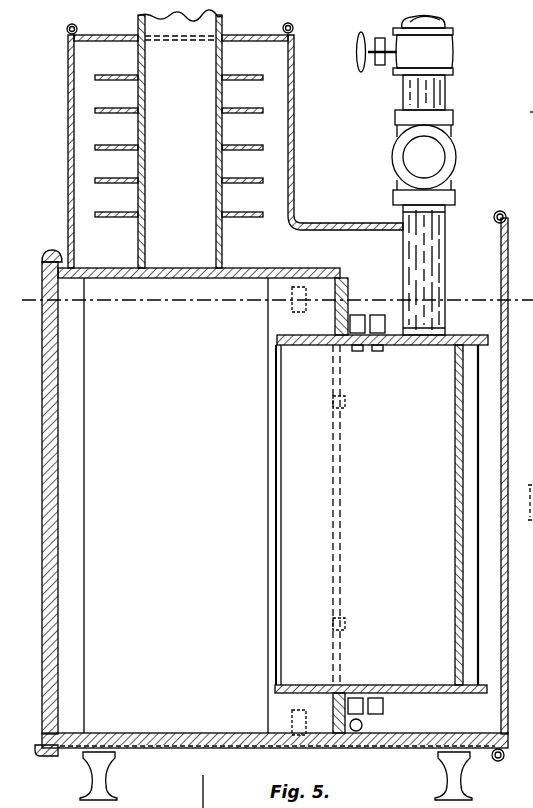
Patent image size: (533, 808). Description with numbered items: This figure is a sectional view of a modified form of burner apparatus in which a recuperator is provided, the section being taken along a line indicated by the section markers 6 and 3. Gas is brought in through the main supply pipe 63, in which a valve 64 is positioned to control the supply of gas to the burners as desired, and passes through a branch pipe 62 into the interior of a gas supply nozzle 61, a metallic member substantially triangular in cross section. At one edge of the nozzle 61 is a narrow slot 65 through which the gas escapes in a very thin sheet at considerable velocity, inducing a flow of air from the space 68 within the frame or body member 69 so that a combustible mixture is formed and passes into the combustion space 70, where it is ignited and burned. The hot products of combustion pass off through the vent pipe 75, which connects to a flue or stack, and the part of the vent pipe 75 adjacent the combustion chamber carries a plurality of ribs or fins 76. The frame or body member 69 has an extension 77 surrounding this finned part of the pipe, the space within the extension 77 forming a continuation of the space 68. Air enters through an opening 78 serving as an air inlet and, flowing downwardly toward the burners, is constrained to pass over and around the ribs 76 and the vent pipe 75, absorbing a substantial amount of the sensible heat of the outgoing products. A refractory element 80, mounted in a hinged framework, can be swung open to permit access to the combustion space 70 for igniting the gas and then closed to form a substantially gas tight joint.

The gas supply nozzle 61 is at (425, 370).
The pipe 62 is at (425, 264).
The main supply pipe 63 is at (402, 24).
The valve 64 is at (435, 58).
The narrow slot 65 is at (501, 620).
The space 68 is at (492, 390).
The frame or body member 69 is at (530, 112).
The combustion space 70 is at (95, 522).
The vent pipe 75 is at (158, 153).
The ribs or fins 76 is at (108, 182).
The extension 77 is at (296, 128).
The opening 78 is at (68, 58).
The refractory element 80 is at (50, 645).
The section line 6 is at (22, 300).
The section marker 3 is at (203, 775).